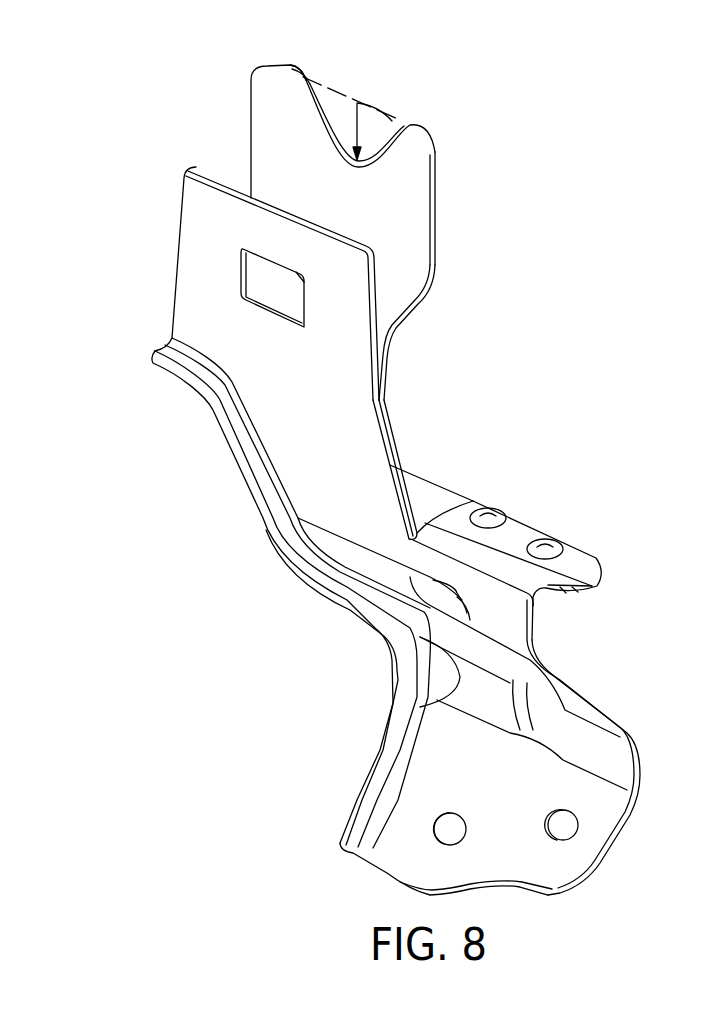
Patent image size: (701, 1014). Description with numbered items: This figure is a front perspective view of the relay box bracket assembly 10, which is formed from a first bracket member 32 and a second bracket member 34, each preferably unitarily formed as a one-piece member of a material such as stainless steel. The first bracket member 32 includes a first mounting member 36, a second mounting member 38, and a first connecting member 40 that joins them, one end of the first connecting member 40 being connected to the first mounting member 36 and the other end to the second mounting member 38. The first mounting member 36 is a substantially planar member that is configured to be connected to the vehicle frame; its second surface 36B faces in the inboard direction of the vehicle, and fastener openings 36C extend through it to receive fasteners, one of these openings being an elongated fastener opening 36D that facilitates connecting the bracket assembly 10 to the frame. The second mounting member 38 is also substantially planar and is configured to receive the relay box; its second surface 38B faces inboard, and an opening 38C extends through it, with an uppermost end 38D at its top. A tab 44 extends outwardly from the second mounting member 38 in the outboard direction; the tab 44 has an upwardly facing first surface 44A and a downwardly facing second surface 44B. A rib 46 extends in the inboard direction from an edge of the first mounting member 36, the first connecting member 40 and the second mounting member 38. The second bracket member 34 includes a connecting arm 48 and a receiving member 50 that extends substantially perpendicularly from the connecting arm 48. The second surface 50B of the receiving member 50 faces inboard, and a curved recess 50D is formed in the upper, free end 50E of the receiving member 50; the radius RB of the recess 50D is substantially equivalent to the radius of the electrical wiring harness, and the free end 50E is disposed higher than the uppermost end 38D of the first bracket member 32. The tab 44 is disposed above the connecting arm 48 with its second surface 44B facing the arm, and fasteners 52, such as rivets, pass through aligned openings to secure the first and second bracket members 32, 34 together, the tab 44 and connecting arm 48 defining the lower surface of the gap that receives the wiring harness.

The relay box bracket assembly 10 is at (477, 193).
The first bracket member 32 is at (181, 222).
The second bracket member 34 is at (437, 146).
The first mounting member 36 is at (620, 843).
The second surface 36B is at (510, 842).
The fastener opening 36C is at (546, 827).
The elongated fastener opening 36D is at (467, 820).
The second mounting member 38 is at (173, 309).
The second surface 38B is at (340, 347).
The opening 38C is at (238, 268).
The uppermost end 38D is at (228, 172).
The first connecting member 40 is at (580, 690).
The tab 44 is at (527, 523).
The first surface 44A is at (577, 557).
The second surface 44B is at (573, 584).
The rib 46 is at (255, 504).
The connecting arm 48 is at (433, 483).
The receiving member 50 is at (252, 108).
The second surface 50B is at (400, 248).
The recess 50D is at (320, 117).
The upper end 50E is at (303, 73).
The fastener 52 is at (497, 516).
The radius of the recess RB is at (371, 114).